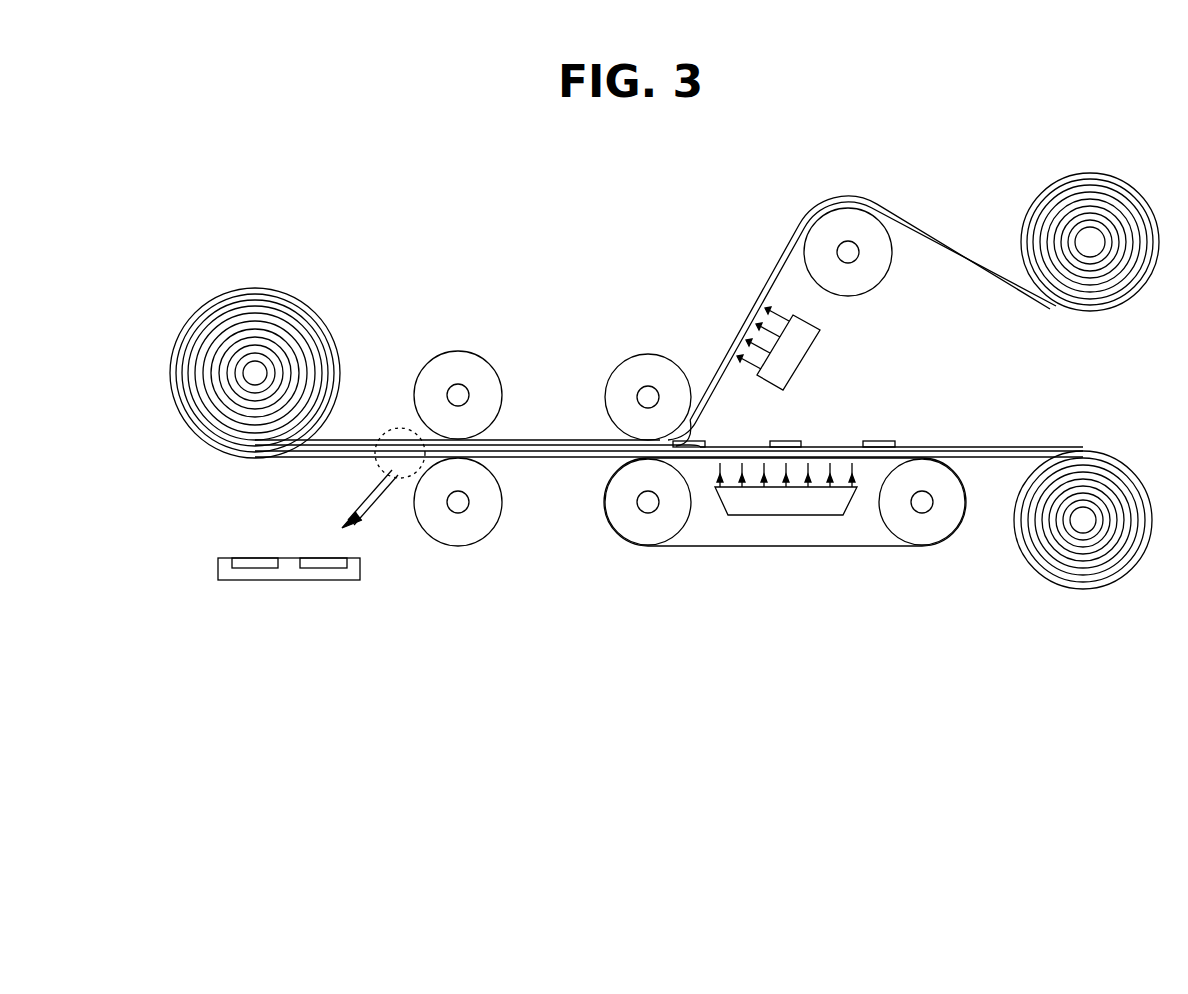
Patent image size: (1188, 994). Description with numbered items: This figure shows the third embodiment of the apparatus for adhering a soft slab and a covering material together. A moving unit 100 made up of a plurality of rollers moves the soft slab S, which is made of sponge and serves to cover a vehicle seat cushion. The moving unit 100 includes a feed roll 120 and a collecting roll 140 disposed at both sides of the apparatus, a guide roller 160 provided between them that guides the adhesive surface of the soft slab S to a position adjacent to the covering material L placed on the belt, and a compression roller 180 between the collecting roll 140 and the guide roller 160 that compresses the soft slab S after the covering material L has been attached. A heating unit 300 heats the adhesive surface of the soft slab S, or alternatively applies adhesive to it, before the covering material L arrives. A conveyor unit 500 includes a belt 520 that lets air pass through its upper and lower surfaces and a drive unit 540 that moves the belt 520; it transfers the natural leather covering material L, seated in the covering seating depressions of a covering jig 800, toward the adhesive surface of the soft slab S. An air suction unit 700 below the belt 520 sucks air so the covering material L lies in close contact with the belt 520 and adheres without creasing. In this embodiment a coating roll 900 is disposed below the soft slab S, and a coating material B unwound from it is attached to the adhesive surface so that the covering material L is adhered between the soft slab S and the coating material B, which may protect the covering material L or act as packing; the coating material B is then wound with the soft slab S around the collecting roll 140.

The moving unit 100 is at (400, 236).
The collecting roll 140 is at (250, 318).
The compression roller 180 is at (462, 352).
The guide roller 160 is at (640, 360).
The soft slab S is at (912, 222).
The heating unit 300 is at (822, 333).
The feed roll 120 is at (1105, 304).
The covering jig 800 is at (896, 444).
The coating material B is at (1030, 450).
The covering material L is at (256, 558).
The conveyor unit 500 is at (680, 568).
The belt 520 is at (838, 548).
The drive unit 540 is at (922, 522).
The air suction unit 700 is at (757, 516).
The coating roll 900 is at (1083, 568).